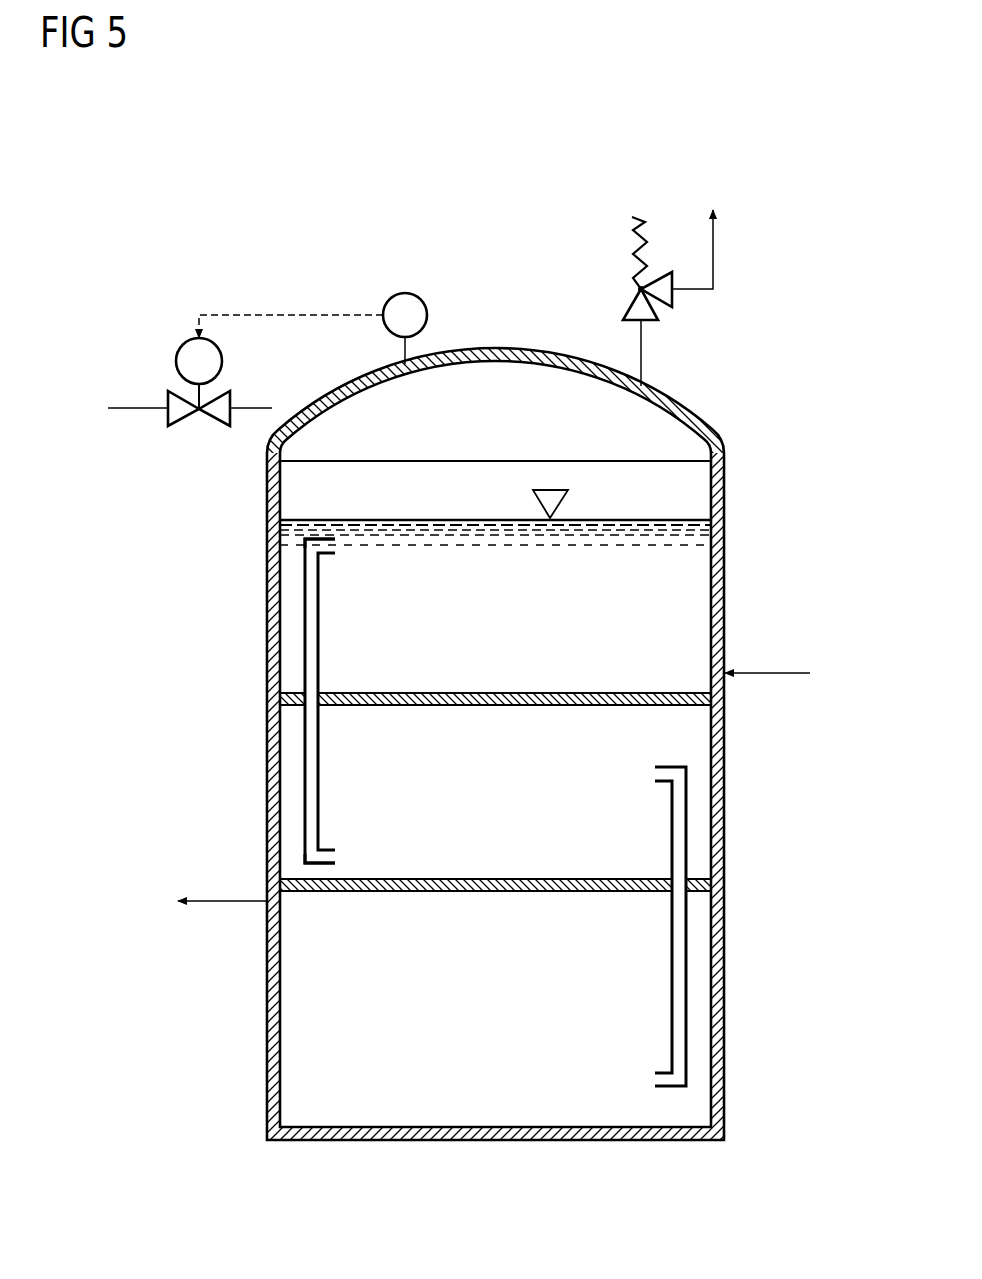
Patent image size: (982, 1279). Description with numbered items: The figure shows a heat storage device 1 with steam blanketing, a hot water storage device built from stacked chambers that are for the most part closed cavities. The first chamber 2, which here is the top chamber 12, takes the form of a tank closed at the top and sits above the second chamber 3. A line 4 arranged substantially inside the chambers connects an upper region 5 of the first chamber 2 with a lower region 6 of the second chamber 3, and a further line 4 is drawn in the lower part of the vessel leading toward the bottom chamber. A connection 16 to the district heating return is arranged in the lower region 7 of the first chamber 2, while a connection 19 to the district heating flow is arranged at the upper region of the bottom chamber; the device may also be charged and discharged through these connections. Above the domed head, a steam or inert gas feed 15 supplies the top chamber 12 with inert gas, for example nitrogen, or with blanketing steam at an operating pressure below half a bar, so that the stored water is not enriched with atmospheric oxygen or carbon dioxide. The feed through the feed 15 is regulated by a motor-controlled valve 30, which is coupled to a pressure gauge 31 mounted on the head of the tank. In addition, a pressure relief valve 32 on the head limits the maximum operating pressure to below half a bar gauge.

The heat storage device 1 is at (250, 117).
The first chamber 2 is at (693, 567).
The top chamber 12 is at (495, 535).
The second chamber 3 is at (692, 800).
The line 4 is at (312, 770).
The upper region of the first chamber 5 is at (292, 537).
The lower region of the second chamber 6 is at (292, 857).
The lower region of the first chamber 7 is at (292, 667).
The steam or inert gas feed 15 is at (296, 406).
The connection to the district heating return 16 is at (770, 672).
The connection to the district heating flow 19 is at (222, 903).
The motor-controlled valve 30 is at (191, 427).
The pressure gauge 31 is at (403, 291).
The pressure relief valve 32 is at (634, 305).